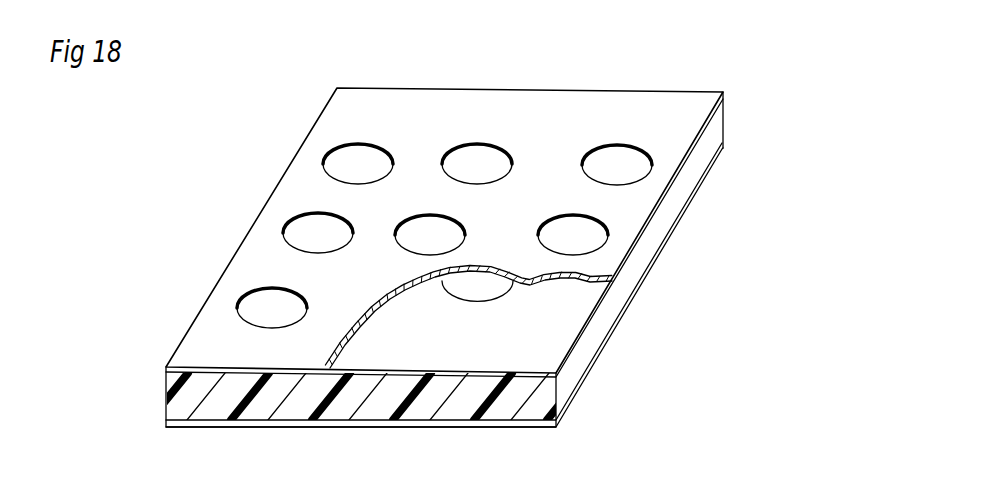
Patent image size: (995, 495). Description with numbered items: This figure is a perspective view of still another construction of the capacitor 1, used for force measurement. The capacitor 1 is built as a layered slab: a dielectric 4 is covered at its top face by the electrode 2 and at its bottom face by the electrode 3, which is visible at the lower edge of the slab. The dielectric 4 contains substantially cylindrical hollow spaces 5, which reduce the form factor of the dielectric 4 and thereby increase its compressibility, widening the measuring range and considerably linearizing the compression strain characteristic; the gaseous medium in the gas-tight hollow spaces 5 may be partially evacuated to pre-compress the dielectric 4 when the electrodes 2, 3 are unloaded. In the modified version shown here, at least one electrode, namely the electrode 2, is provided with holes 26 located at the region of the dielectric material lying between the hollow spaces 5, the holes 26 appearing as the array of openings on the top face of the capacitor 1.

The capacitor 1 is at (311, 114).
The electrode 2 is at (640, 103).
The electrode 3 is at (590, 377).
The dielectric 4 is at (594, 322).
The hollow spaces 5 is at (490, 290).
The holes 26 is at (313, 232).